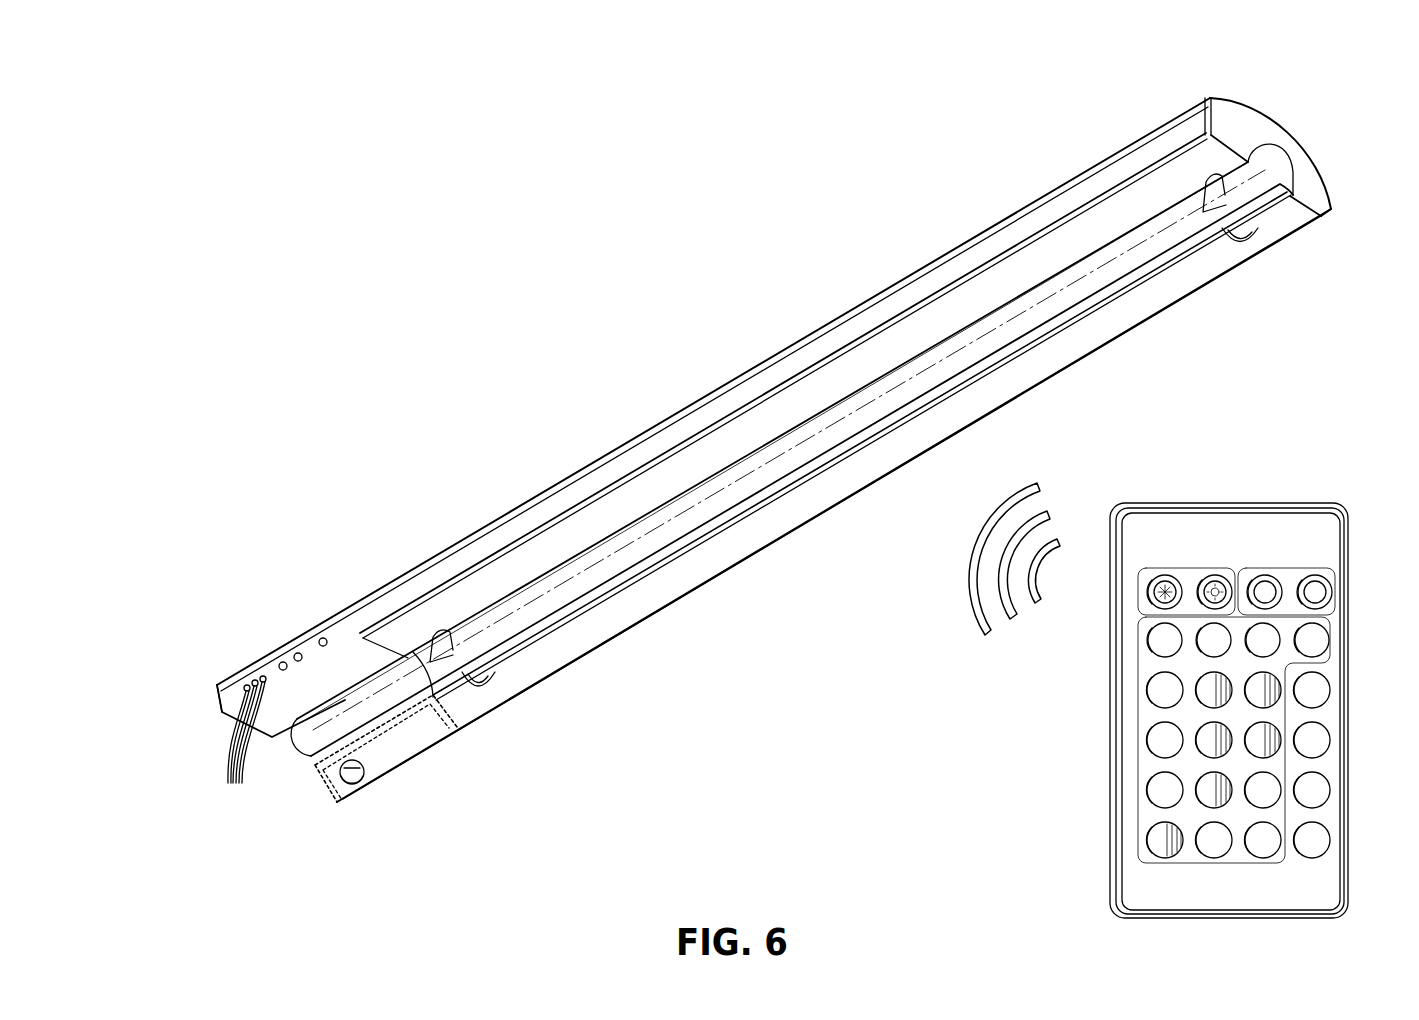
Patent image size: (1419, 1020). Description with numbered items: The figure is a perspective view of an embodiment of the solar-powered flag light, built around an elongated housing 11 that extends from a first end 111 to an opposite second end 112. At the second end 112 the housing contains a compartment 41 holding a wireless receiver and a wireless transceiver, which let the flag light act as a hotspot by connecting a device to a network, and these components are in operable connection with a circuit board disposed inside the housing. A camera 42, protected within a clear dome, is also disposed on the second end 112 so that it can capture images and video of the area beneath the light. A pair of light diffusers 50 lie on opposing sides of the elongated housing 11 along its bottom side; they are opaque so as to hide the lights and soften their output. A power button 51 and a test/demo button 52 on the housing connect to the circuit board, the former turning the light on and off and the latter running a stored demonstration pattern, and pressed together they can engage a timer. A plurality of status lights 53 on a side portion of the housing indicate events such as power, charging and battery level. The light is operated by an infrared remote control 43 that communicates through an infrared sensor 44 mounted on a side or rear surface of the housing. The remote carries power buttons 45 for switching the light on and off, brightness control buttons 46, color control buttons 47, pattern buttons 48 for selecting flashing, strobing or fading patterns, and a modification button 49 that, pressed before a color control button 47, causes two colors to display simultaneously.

The elongated housing 11 is at (1187, 128).
The first end 111 is at (1235, 128).
The pair of light diffusers 50 is at (882, 352).
The compartment 41 is at (393, 748).
The camera 42 is at (338, 803).
The infrared remote control 43 is at (1238, 677).
The infrared sensor 44 is at (323, 640).
The pair of power buttons 45 is at (1330, 600).
The plurality of brightness control buttons 46 is at (1205, 592).
The plurality of color control buttons 47 is at (1150, 788).
The plurality of pattern buttons 48 is at (1318, 790).
The modification button 49 is at (1316, 842).
The power button 51 is at (298, 655).
The test/demo button 52 is at (283, 664).
The plurality of status lights 53 is at (243, 743).
The second end 112 is at (218, 687).